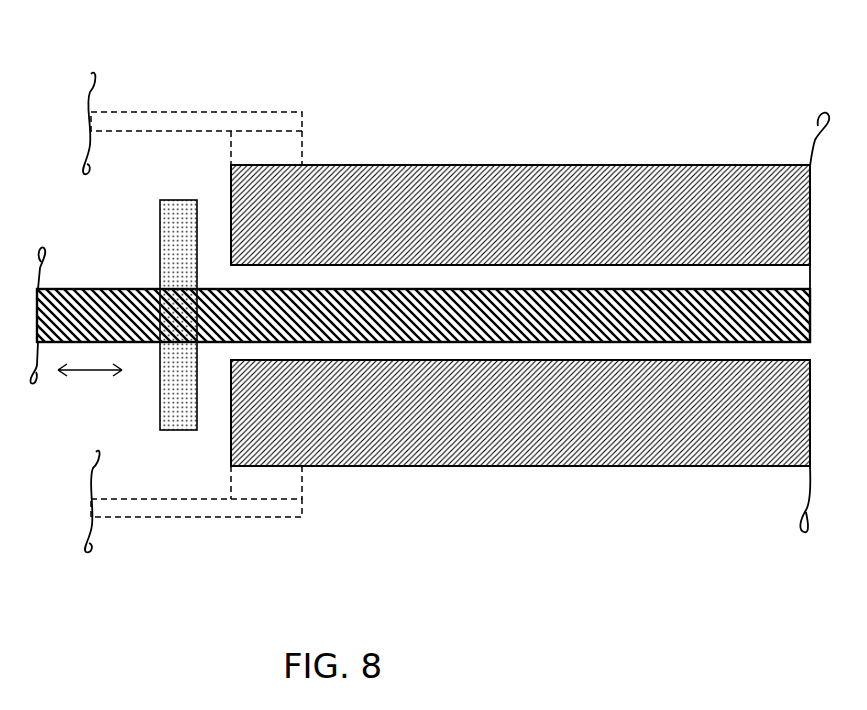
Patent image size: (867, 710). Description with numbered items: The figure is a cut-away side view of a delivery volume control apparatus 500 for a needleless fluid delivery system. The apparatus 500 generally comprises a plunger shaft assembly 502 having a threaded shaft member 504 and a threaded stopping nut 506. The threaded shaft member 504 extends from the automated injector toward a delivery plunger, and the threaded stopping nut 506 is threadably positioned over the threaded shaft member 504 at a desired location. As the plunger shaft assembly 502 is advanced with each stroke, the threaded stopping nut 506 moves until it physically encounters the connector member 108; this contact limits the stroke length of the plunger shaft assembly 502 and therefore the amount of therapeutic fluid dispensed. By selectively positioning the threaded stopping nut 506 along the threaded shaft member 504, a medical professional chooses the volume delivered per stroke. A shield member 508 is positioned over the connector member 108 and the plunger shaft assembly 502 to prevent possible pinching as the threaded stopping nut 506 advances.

The delivery volume control apparatus 500 is at (655, 98).
The connector member 108 is at (538, 183).
The plunger shaft assembly 502 is at (418, 290).
The threaded shaft member 504 is at (547, 320).
The threaded stopping nut 506 is at (160, 400).
The shield member 508 is at (240, 518).